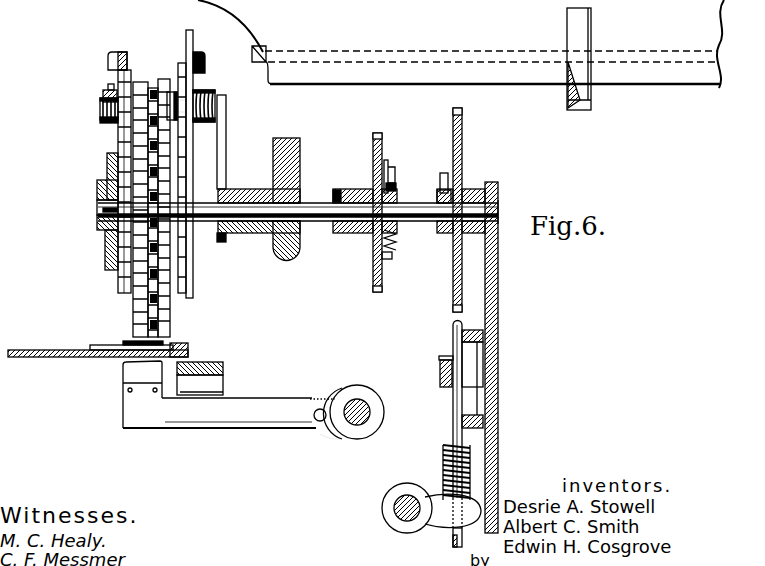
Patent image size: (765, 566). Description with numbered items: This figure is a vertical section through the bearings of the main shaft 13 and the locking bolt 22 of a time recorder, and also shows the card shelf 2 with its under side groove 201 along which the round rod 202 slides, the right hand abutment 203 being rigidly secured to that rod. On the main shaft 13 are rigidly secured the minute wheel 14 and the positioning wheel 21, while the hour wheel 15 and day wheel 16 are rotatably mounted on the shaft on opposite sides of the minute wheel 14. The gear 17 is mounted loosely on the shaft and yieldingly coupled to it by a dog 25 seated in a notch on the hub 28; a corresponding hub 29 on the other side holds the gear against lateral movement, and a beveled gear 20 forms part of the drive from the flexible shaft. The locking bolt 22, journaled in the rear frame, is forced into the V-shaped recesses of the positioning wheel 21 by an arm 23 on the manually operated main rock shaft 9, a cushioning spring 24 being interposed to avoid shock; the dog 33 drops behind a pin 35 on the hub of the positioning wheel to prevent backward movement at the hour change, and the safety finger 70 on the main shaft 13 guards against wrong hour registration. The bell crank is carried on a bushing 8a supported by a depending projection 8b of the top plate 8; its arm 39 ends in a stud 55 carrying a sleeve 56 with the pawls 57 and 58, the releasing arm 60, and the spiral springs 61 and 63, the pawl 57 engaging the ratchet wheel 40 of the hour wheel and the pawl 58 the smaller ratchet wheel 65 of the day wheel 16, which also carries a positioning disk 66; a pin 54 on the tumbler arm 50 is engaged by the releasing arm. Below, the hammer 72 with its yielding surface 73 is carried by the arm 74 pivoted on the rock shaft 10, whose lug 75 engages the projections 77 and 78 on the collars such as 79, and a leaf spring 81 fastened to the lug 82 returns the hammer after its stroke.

The shelf 2 is at (34, 349).
The top plate 8 is at (498, 446).
The bushing 8a is at (301, 230).
The depending projection 8b is at (317, 140).
The main rock shaft 9 is at (396, 507).
The rock shaft 10 is at (363, 404).
The main shaft 13 is at (309, 203).
The minute wheel 14 is at (150, 88).
The hour wheel 15 is at (140, 82).
The day wheel 16 is at (165, 80).
The gear 17 is at (381, 142).
The beveled gear 20 is at (396, 252).
The positioning wheel 21 is at (463, 152).
The locking bolt 22 is at (463, 403).
The arm 23 is at (453, 534).
The cushioning spring 24 is at (447, 466).
The dog 25 is at (389, 172).
The hub 28 is at (397, 193).
The hub 29 is at (341, 189).
The dog 33 is at (442, 174).
The pin 35 is at (443, 188).
The arm 39 is at (222, 152).
The ratchet wheel 40 is at (128, 300).
The arm 50 is at (121, 84).
The pin 54 is at (104, 91).
The stud 55 is at (100, 108).
The sleeve 56 is at (170, 92).
The pawl 57 is at (135, 83).
The pawl 58 is at (182, 105).
The releasing arm 60 is at (189, 77).
The spiral spring 61 is at (206, 91).
The spiral spring 63 is at (105, 124).
The ratchet wheel 65 is at (181, 296).
The positioning disk 66 is at (191, 276).
The safety finger 70 is at (355, 226).
The hammer 72 is at (128, 410).
The yielding surface 73 is at (124, 377).
The arm 74 is at (218, 429).
The lug 75 is at (318, 421).
The projection 77 is at (335, 381).
The projection 78 is at (333, 440).
The collar 79 is at (385, 412).
The leaf spring 81 is at (215, 392).
The lug 82 is at (223, 368).
The groove 201 is at (659, 60).
The rod 202 is at (263, 56).
The abutment 203 is at (567, 36).